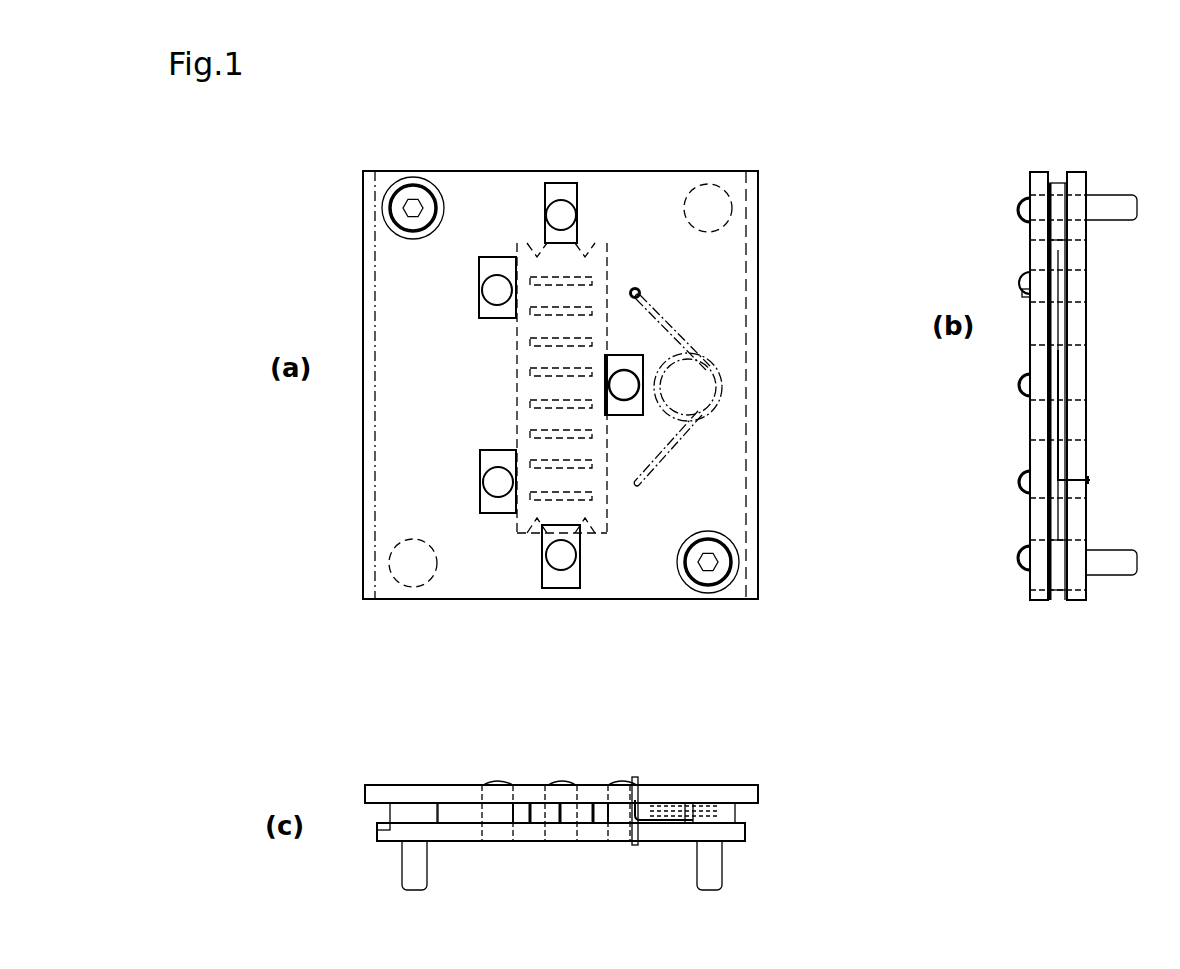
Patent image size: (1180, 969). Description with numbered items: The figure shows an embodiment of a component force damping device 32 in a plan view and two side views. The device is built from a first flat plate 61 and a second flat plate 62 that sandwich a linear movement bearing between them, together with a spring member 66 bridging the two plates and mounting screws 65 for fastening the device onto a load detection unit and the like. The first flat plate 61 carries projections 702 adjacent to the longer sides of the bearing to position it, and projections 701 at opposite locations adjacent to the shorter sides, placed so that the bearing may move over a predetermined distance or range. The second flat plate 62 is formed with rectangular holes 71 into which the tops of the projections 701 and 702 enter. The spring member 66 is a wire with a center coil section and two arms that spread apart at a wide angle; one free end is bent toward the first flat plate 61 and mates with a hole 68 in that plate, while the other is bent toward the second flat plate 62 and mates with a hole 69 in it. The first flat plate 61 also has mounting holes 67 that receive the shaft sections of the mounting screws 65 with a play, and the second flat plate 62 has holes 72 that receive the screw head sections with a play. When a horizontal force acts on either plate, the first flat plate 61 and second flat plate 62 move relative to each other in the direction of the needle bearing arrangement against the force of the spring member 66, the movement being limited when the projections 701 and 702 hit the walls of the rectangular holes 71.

The component force damping device 32 is at (907, 663).
The first flat plate 61 is at (1078, 170).
The second flat plate 62 is at (680, 172).
The mounting screws 65 is at (405, 185).
The spring member 66 is at (680, 443).
The mounting holes 67 is at (377, 827).
The hole 68 is at (1073, 475).
The hole 69 is at (640, 285).
The rectangular holes 71 is at (577, 187).
The holes 72 is at (718, 185).
The projections 701 is at (560, 200).
The projections 702 is at (493, 272).